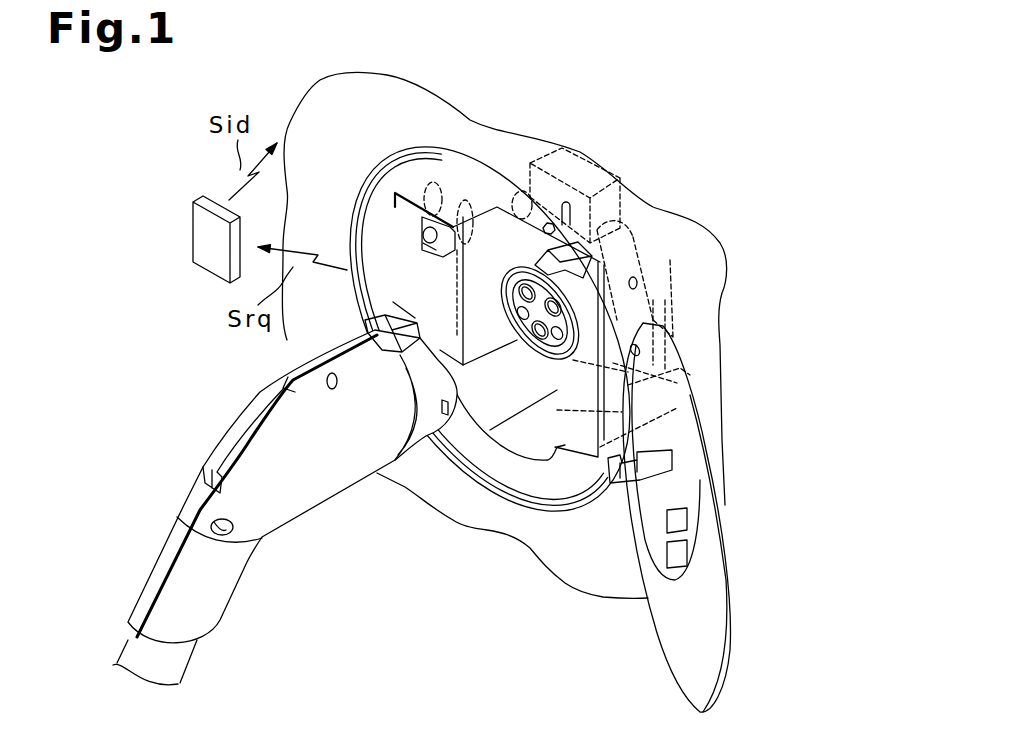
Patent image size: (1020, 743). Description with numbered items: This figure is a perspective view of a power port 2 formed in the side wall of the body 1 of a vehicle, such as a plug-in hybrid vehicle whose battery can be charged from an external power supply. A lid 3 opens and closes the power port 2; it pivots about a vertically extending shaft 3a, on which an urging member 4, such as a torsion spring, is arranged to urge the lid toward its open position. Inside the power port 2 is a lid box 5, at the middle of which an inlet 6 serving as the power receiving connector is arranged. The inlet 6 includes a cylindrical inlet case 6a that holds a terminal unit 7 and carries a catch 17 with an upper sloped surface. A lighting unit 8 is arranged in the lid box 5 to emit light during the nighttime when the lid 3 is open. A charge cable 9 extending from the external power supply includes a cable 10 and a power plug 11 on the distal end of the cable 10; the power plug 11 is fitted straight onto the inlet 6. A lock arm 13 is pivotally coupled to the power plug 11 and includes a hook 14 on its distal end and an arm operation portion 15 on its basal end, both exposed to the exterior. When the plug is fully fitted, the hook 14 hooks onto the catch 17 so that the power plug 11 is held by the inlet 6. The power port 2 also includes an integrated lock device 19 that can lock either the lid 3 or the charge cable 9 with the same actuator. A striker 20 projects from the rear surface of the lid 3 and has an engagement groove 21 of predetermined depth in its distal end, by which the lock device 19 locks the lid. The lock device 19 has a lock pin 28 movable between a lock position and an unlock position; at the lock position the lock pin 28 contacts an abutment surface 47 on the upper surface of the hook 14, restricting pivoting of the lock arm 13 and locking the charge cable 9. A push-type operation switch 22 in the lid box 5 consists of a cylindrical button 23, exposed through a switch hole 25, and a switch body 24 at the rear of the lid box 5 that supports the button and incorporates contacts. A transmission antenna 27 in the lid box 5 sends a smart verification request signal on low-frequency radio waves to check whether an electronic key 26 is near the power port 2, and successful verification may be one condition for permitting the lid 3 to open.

The body 1 is at (537, 547).
The power port 2 is at (404, 187).
The lid 3 is at (710, 577).
The shaft 3a is at (680, 368).
The urging member 4 is at (687, 380).
The lid box 5 is at (573, 490).
The inlet 6 is at (503, 313).
The inlet case 6a is at (527, 350).
The terminal unit 7 is at (507, 290).
The lighting unit 8 is at (513, 193).
The charge cable 9 is at (157, 558).
The cable 10 is at (133, 650).
The power plug 11 is at (313, 497).
The lock arm 13 is at (360, 320).
The hook 14 is at (430, 330).
The arm operation portion 15 is at (240, 423).
The catch 17 is at (530, 253).
The lock device 19 is at (620, 167).
The striker 20 is at (620, 483).
The engagement groove 21 is at (647, 457).
The operation switch 22 is at (430, 203).
The button 23 is at (424, 233).
The switch body 24 is at (462, 210).
The switch hole 25 is at (423, 243).
The electronic key 26 is at (222, 203).
The transmission antenna 27 is at (428, 352).
The lock pin 28 is at (640, 223).
The abutment surface 47 is at (393, 302).